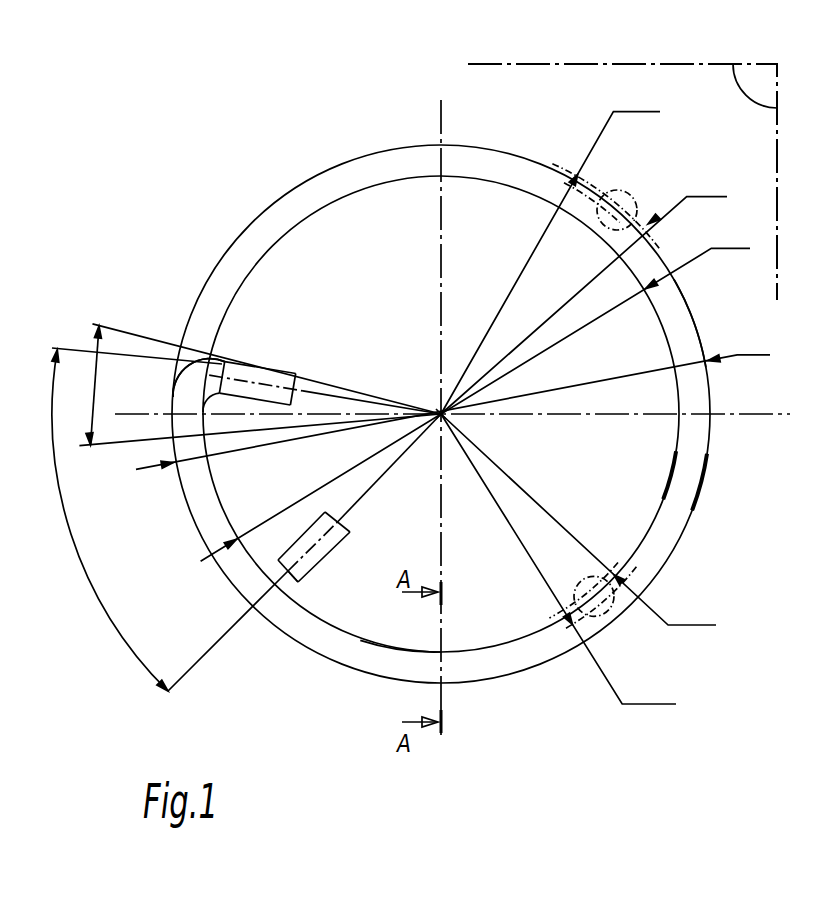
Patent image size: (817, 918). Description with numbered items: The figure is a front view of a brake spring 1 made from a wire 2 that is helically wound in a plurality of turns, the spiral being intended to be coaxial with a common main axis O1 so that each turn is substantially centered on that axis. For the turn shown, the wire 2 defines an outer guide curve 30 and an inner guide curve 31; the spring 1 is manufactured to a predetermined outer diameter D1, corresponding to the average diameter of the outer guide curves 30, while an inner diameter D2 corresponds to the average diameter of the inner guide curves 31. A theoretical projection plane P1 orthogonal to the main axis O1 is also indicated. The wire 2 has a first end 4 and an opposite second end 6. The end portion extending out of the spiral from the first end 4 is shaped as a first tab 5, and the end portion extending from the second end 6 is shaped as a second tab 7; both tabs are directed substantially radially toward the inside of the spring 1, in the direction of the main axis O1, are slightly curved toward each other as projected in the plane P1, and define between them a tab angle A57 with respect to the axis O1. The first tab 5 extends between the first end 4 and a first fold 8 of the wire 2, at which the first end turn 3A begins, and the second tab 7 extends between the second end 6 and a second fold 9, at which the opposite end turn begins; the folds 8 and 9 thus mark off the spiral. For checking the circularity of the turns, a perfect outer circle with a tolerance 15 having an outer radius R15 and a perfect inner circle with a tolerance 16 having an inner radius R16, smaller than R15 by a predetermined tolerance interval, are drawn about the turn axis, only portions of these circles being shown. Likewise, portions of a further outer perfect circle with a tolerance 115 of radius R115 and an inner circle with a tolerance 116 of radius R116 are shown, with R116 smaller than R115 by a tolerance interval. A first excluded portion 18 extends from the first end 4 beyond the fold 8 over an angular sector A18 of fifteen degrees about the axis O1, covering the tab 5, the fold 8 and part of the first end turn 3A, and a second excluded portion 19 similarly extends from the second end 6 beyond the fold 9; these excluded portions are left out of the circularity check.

The spring 1 is at (693, 545).
The wire 2 is at (675, 327).
The first end turn 3A is at (378, 668).
The first end 4 is at (303, 384).
The first tab 5 is at (296, 373).
The second end 6 is at (343, 505).
The second tab 7 is at (352, 533).
The first fold 8 is at (192, 394).
The second fold 9 is at (276, 568).
The perfect outer circle with a tolerance 15 is at (600, 174).
The perfect inner circle with a tolerance 16 is at (584, 205).
The first excluded portion 18 is at (199, 372).
The second excluded portion 19 is at (286, 587).
The outer guide curve 30 is at (704, 482).
The inner guide curve 31 is at (670, 470).
The outer perfect circle with a tolerance 115 is at (560, 641).
The perfect inner circle with a tolerance 116 is at (548, 608).
The main axis O1 is at (430, 402).
The theoretical projection plane P1 is at (622, 182).
The outer diameter D1 is at (453, 400).
The inner diameter D2 is at (478, 393).
The outer radius R15 is at (584, 293).
The inner radius R16 is at (550, 250).
The outer radius R115 is at (558, 560).
The inner radius R116 is at (578, 519).
The angular sector A18 is at (256, 385).
The tab angle A57 is at (110, 520).